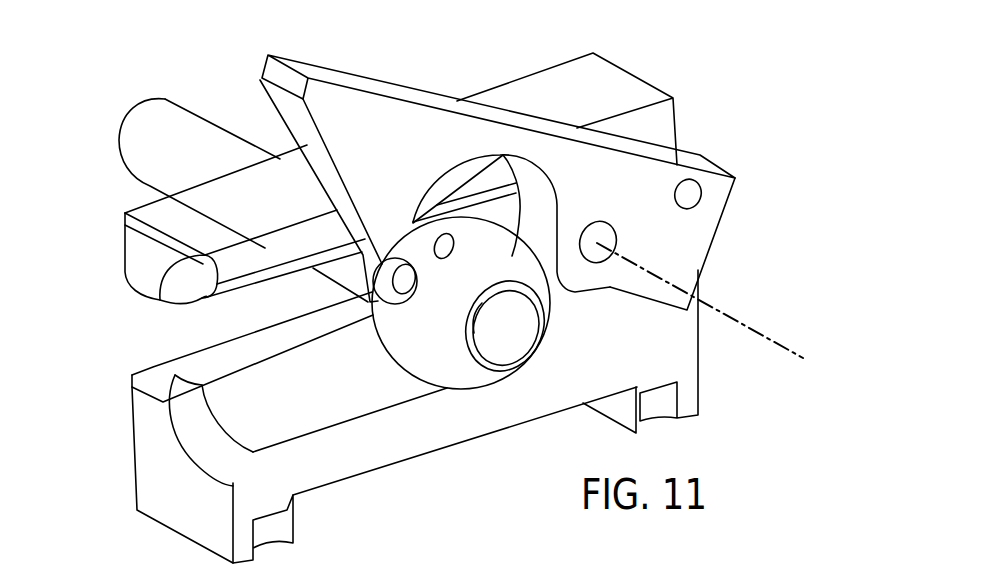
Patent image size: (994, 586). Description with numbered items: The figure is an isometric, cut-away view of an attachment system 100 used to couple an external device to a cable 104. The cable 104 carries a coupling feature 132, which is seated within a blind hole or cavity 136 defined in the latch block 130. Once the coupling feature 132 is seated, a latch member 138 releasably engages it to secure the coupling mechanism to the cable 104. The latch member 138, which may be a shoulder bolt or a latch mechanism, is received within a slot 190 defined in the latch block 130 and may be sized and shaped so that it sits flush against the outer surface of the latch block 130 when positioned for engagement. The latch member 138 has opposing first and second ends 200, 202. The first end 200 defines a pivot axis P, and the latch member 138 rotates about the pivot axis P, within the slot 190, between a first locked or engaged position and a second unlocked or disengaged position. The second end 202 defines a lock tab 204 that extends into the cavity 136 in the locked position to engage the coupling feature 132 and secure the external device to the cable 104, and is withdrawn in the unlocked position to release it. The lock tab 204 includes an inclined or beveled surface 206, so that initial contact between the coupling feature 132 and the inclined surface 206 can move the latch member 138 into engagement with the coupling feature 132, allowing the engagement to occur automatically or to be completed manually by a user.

The attachment system 100 is at (785, 130).
The cable 104 is at (127, 120).
The latch block 130 is at (676, 357).
The coupling feature 132 is at (457, 363).
The blind hole or cavity 136 is at (257, 400).
The latch member 138 is at (525, 147).
The slot 190 is at (167, 194).
The first end 200 is at (680, 238).
The second end 202 is at (345, 107).
The lock tab 204 is at (362, 317).
The inclined surface 206 is at (308, 147).
The pivot axis P is at (733, 320).